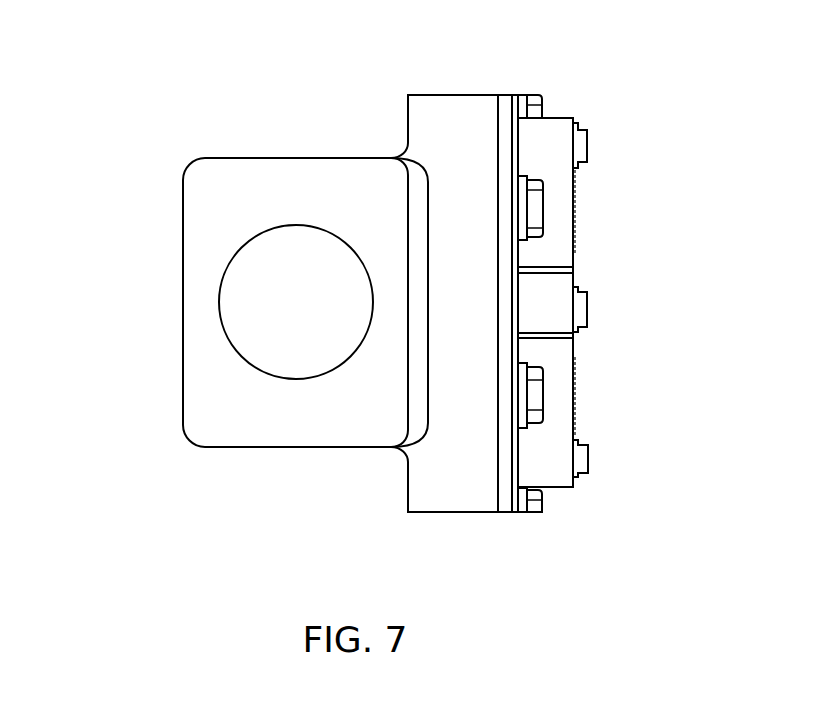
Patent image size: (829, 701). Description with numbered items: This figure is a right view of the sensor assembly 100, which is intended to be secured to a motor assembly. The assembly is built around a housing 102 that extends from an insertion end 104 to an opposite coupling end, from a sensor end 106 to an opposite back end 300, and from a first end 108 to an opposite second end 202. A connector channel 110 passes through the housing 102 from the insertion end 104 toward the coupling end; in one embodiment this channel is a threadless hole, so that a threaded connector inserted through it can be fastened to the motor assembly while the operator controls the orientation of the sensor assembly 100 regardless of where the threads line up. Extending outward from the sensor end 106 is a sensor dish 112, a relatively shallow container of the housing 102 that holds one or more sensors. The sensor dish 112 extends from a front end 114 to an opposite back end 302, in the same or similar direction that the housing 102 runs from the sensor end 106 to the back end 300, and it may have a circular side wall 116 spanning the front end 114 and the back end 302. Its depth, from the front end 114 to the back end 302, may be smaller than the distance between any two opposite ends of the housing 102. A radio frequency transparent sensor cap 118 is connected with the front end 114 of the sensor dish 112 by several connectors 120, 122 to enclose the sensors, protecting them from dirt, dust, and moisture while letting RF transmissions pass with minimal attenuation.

The sensor assembly 100 is at (187, 532).
The housing 102 is at (189, 158).
The insertion end 104 is at (212, 198).
The sensor end 106 is at (424, 380).
The first end 108 is at (283, 145).
The connector channel 110 is at (276, 316).
The sensor dish 112 is at (660, 90).
The front end 114 is at (525, 155).
The circular side wall 116 is at (473, 83).
The RF transparent sensor cap 118 is at (563, 118).
The connector 120 is at (587, 145).
The connector 122 is at (543, 213).
The second end 202 is at (293, 460).
The back end 300 is at (171, 383).
The back end 302 is at (395, 110).